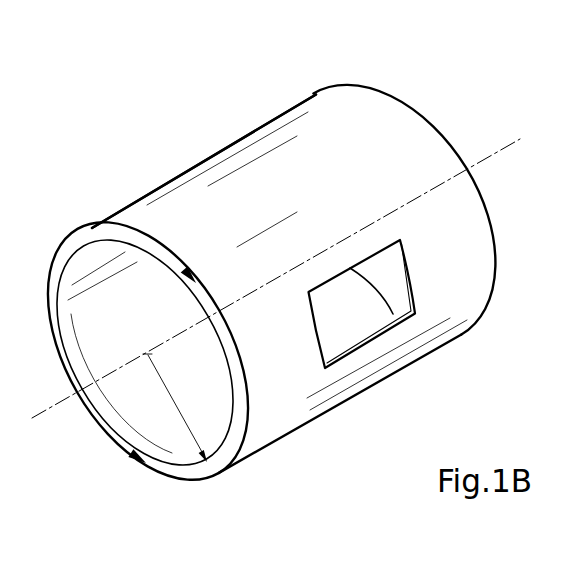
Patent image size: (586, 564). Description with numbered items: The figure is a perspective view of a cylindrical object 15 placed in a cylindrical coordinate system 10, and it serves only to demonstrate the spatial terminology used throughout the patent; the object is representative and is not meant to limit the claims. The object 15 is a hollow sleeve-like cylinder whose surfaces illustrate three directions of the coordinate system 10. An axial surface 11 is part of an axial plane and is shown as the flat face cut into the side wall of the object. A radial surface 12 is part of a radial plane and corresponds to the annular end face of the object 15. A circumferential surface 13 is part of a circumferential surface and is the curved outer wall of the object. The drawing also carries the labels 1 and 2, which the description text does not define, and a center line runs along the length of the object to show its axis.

The longitudinal axis 1 is at (42, 417).
The inner diameter 2 is at (183, 414).
The cylindrical coordinate system 10 is at (436, 87).
The axial surface 11 is at (391, 328).
The radial surface 12 is at (160, 467).
The circumferential surface 13 is at (250, 181).
The object 15 is at (299, 80).